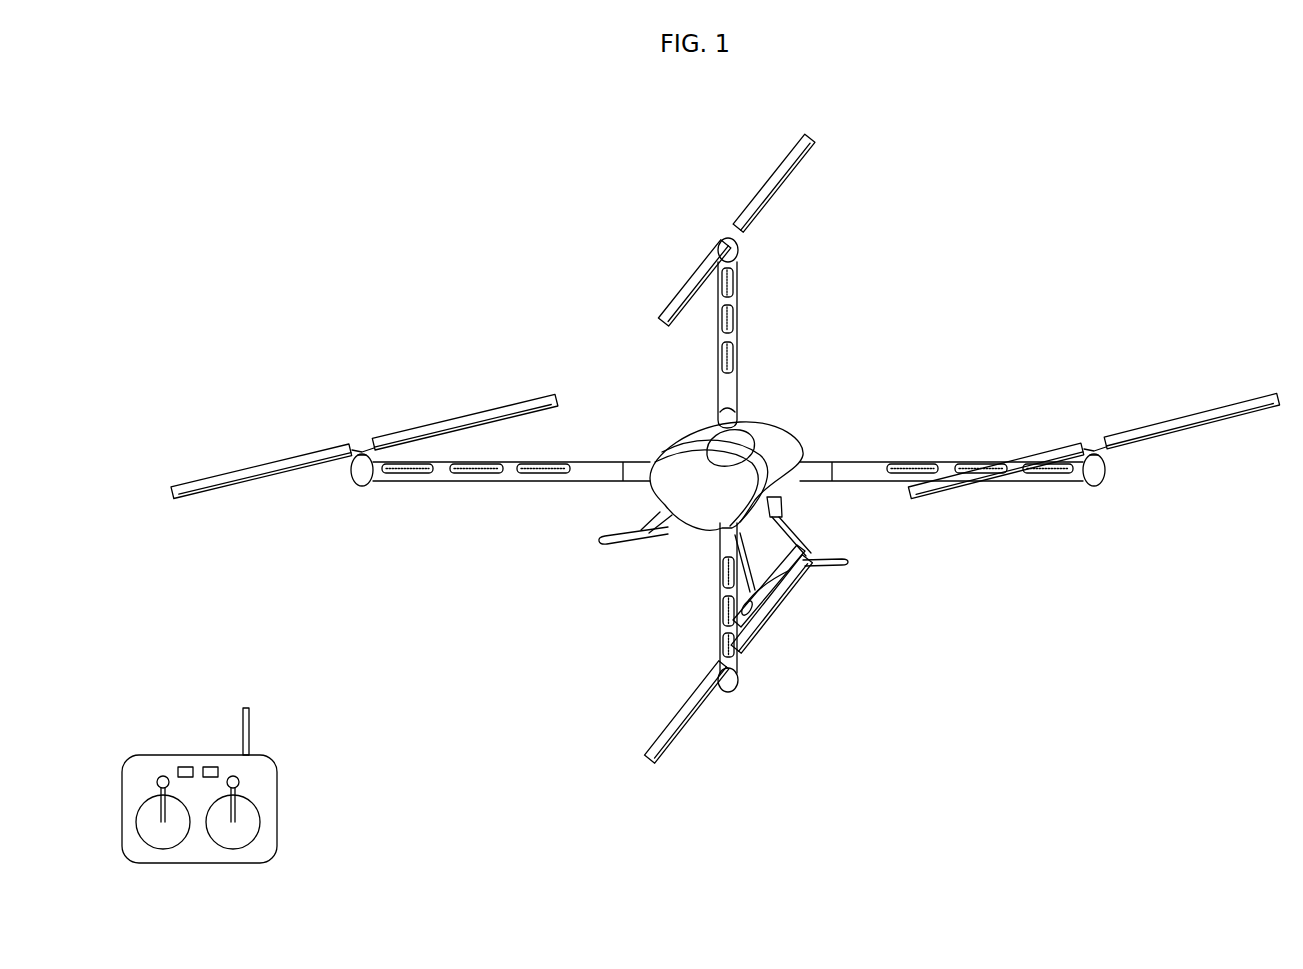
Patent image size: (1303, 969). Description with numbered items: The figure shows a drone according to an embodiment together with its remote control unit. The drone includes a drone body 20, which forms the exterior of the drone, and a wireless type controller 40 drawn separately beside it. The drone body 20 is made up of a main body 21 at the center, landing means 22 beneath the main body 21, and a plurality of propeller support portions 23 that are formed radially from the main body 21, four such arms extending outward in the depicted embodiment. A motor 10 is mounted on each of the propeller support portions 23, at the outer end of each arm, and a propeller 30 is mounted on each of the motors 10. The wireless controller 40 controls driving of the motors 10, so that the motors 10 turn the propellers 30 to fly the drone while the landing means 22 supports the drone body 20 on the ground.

The motor 10 is at (725, 448).
The drone body 20 is at (753, 433).
The main body 21 is at (742, 442).
The landing means 22 is at (792, 533).
The propeller support portion 23 is at (718, 551).
The propeller 30 is at (667, 716).
The controller 40 is at (298, 805).